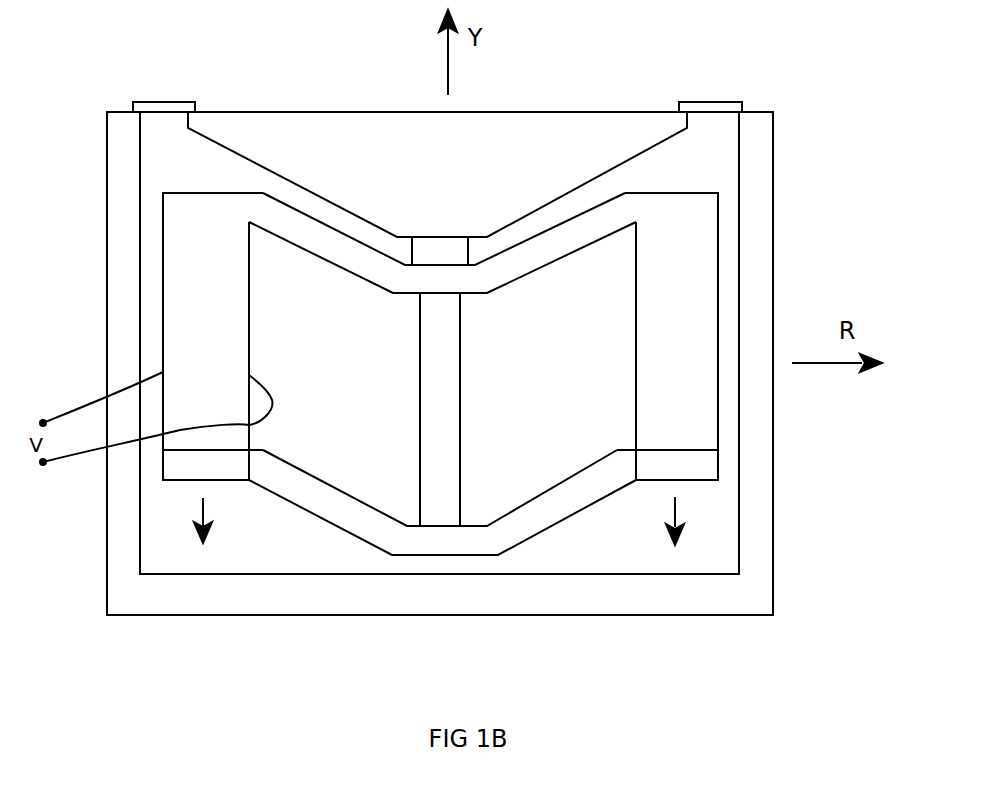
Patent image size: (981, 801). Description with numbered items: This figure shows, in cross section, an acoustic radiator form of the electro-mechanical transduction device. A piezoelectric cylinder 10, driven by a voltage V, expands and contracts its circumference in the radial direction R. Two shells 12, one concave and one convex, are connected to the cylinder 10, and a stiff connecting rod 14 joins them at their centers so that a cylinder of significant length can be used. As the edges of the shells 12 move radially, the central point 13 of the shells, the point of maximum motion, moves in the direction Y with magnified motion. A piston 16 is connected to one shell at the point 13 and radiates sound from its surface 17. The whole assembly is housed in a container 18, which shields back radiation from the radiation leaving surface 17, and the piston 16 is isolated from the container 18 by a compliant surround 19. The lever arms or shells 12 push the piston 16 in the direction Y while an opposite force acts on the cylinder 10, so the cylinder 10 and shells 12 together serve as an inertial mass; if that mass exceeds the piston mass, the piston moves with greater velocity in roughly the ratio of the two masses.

The piezoelectric cylinder 10 is at (440, 336).
The shells 12 is at (357, 256).
The central point of the shells 13 is at (440, 251).
The connecting rod 14 is at (440, 409).
The piston 16 is at (437, 174).
The radiating surface 17 is at (372, 110).
The container 18 is at (122, 313).
The compliant surround 19 is at (170, 105).